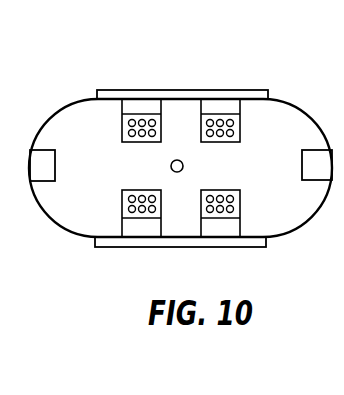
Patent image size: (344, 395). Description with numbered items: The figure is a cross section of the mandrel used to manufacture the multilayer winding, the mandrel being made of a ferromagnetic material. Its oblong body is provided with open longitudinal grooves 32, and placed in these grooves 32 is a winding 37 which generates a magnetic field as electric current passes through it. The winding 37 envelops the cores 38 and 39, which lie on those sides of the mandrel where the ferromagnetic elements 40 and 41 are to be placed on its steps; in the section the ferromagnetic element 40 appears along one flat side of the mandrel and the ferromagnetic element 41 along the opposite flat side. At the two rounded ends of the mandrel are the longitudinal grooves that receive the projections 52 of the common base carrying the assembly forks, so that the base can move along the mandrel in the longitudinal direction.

The open longitudinal grooves 32 is at (210, 103).
The winding 37 is at (142, 137).
The core 38 is at (178, 126).
The core 39 is at (178, 214).
The ferromagnetic element 40 is at (107, 93).
The ferromagnetic element 41 is at (117, 247).
The projections 52 is at (318, 173).